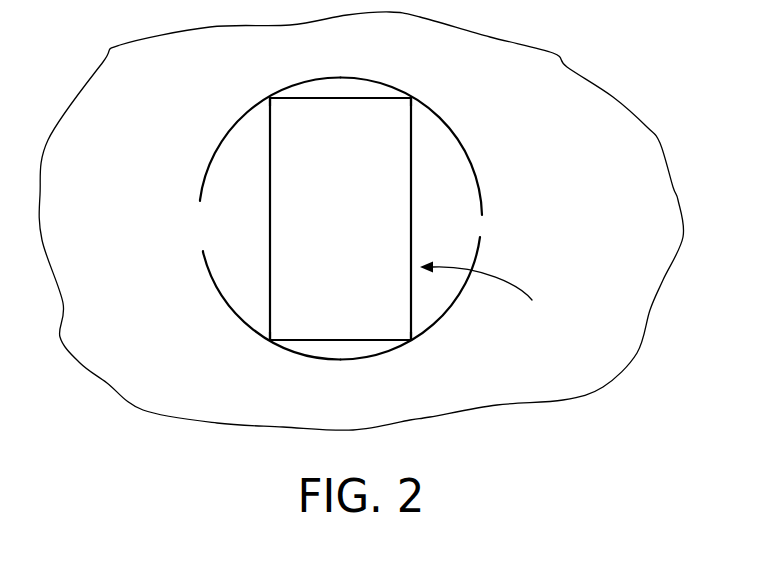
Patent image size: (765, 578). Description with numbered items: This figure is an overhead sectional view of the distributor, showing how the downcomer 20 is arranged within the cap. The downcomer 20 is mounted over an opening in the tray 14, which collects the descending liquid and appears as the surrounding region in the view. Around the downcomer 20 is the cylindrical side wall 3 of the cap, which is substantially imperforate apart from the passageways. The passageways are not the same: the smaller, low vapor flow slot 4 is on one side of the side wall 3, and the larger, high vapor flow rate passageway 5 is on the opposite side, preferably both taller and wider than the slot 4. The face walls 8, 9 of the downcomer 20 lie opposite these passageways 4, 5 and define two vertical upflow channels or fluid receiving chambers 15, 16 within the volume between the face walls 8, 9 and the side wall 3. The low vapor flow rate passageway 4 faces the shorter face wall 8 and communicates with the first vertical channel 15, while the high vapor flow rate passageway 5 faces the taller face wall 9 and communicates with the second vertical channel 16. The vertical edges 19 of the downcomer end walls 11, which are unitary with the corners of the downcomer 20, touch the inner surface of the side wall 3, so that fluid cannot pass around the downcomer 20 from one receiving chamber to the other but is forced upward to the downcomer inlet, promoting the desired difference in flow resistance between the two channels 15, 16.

The cylindrical side wall 3 is at (252, 335).
The low vapor flow passageway 4 is at (480, 230).
The high vapor flow rate passageway 5 is at (200, 233).
The face wall 8 is at (412, 155).
The face wall 9 is at (268, 150).
The downcomer end wall 11 is at (352, 98).
The tray 14 is at (612, 262).
The first vertical channel 15 is at (435, 200).
The second vertical channel 16 is at (245, 208).
The vertical edge 19 is at (270, 98).
The downcomer 20 is at (491, 296).